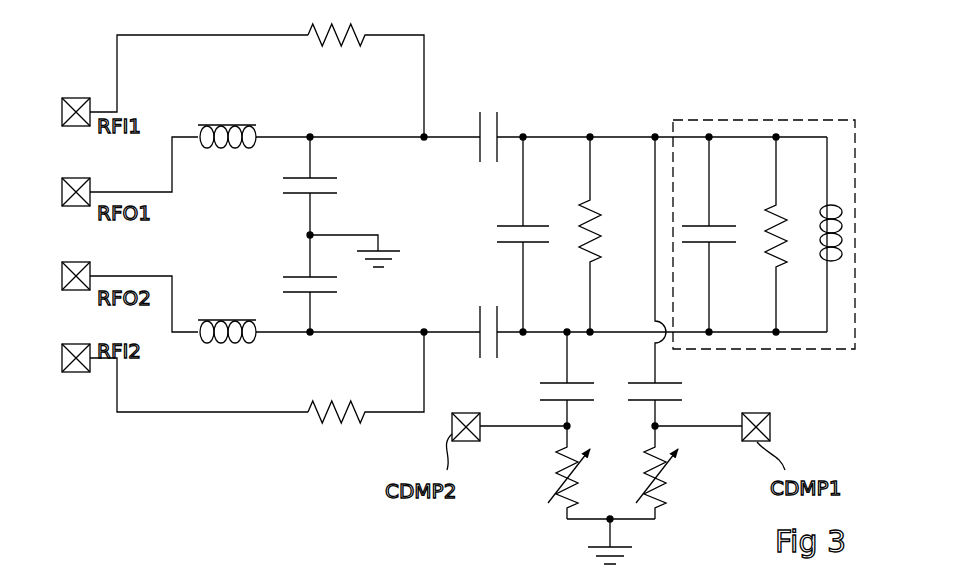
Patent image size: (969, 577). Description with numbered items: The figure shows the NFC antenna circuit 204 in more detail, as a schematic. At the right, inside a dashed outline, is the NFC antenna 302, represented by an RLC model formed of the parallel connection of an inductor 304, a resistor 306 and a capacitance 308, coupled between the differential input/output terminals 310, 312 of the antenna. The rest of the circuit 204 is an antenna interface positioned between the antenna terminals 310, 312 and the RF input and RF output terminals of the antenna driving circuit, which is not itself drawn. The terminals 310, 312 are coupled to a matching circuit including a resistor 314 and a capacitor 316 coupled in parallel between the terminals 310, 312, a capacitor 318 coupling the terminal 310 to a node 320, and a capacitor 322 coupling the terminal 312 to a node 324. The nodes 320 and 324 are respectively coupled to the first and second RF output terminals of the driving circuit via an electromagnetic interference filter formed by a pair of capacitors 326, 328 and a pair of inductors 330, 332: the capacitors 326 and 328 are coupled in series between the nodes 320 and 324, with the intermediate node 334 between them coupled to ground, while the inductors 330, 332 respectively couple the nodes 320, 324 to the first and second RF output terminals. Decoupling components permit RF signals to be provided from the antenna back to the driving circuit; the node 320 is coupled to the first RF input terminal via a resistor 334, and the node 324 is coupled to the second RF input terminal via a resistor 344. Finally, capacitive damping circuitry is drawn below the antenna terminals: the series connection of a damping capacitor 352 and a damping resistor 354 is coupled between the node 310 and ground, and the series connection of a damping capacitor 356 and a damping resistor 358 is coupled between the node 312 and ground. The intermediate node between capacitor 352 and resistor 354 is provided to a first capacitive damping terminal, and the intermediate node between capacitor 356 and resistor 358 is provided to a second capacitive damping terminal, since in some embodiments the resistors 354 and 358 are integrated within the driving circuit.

The NFC antenna circuit 204 is at (800, 54).
The NFC antenna 302 is at (733, 125).
The inductor 304 is at (822, 205).
The resistor 306 is at (778, 264).
The capacitance 308 is at (728, 224).
The differential input/output terminal 310 is at (590, 135).
The differential input/output terminal 312 is at (592, 336).
The resistor 314 is at (589, 210).
The capacitor 316 is at (500, 222).
The capacitor 318 is at (500, 122).
The node 320 is at (424, 140).
The capacitor 322 is at (480, 306).
The node 324 is at (424, 330).
The capacitor 326 is at (325, 176).
The capacitor 328 is at (337, 295).
The inductor 330 is at (222, 148).
The inductor 332 is at (220, 318).
The intermediate node / resistor 334 is at (356, 30).
The resistor 344 is at (333, 425).
The damping capacitor 352 is at (682, 382).
The damping resistor 354 is at (663, 480).
The damping capacitor 356 is at (540, 383).
The damping resistor 358 is at (560, 473).